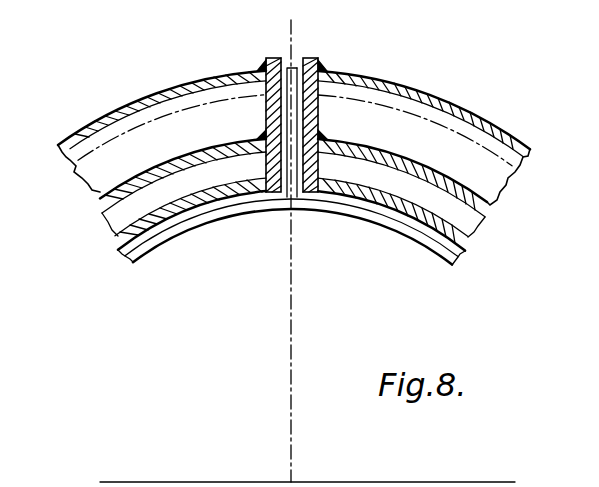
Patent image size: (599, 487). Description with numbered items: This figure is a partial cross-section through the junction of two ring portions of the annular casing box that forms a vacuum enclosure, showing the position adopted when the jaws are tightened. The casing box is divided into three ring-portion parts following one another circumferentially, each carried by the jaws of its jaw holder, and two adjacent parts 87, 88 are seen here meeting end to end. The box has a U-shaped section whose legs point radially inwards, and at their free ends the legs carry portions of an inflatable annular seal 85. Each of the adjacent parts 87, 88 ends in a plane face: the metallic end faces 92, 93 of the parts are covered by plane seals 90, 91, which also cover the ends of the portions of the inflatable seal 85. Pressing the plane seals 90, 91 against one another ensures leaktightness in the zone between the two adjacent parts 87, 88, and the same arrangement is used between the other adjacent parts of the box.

The inflatable annular seal 85 is at (196, 178).
The casing box part 87 is at (160, 128).
The casing box part 88 is at (436, 128).
The plane seal 90 is at (287, 198).
The plane seal 91 is at (298, 198).
The metallic end face 92 is at (281, 60).
The metallic end face 93 is at (310, 58).